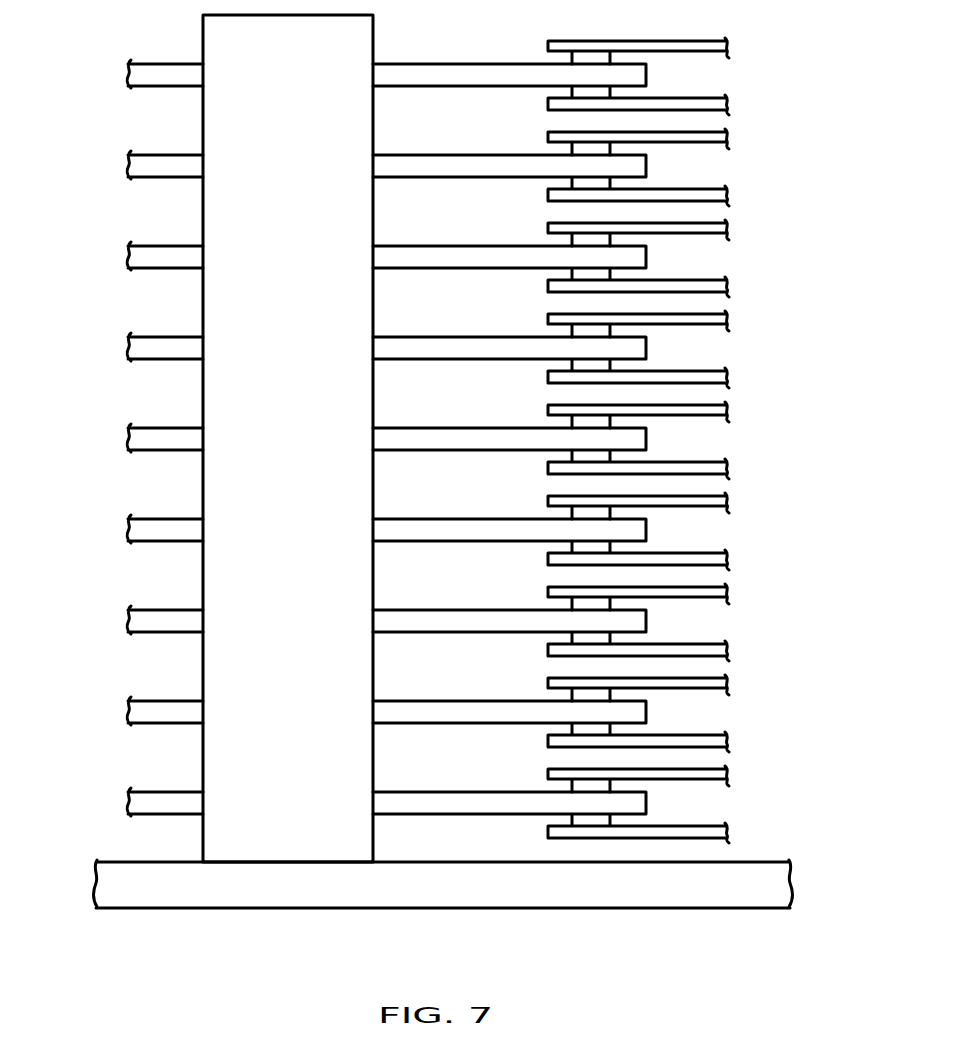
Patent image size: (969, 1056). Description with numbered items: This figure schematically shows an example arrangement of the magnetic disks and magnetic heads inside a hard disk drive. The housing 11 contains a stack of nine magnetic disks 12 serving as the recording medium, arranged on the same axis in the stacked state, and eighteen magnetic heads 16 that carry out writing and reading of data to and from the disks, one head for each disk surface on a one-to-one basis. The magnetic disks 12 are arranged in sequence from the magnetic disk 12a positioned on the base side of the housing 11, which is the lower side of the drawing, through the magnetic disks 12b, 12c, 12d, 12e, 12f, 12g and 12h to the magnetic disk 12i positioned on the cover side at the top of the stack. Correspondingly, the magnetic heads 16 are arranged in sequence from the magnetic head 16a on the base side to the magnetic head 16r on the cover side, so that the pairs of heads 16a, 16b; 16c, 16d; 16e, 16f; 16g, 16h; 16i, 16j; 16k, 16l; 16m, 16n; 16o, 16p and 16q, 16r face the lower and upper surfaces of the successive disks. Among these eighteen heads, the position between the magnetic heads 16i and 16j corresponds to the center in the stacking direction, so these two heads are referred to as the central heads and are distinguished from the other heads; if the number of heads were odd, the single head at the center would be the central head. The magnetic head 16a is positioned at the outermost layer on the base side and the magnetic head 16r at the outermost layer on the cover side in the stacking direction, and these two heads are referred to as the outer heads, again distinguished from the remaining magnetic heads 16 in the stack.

The housing 11 is at (741, 910).
The magnetic disk 12 is at (113, 449).
The magnetic disk 12a is at (133, 804).
The magnetic disk 12b is at (133, 713).
The magnetic disk 12c is at (133, 622).
The magnetic disk 12d is at (133, 531).
The magnetic disk 12e is at (133, 440).
The magnetic disk 12f is at (133, 349).
The magnetic disk 12g is at (133, 258).
The magnetic disk 12h is at (133, 167).
The magnetic disk 12i is at (133, 76).
The magnetic head 16 is at (576, 444).
The magnetic head 16a is at (566, 820).
The magnetic head 16b is at (618, 786).
The magnetic head 16c is at (566, 729).
The magnetic head 16d is at (618, 695).
The magnetic head 16e is at (566, 638).
The magnetic head 16f is at (618, 604).
The magnetic head 16g is at (566, 547).
The magnetic head 16h is at (618, 513).
The magnetic head 16i is at (566, 456).
The magnetic head 16j is at (618, 422).
The magnetic head 16k is at (566, 365).
The magnetic head 16l is at (618, 331).
The magnetic head 16m is at (566, 274).
The magnetic head 16n is at (618, 240).
The magnetic head 16o is at (566, 183).
The magnetic head 16p is at (618, 149).
The magnetic head 16q is at (566, 92).
The magnetic head 16r is at (618, 58).